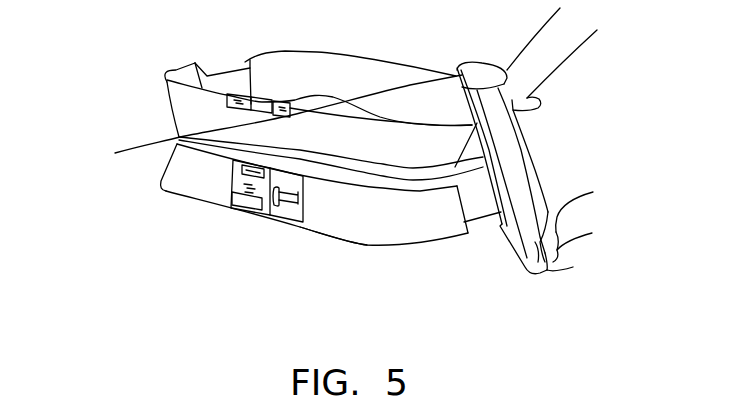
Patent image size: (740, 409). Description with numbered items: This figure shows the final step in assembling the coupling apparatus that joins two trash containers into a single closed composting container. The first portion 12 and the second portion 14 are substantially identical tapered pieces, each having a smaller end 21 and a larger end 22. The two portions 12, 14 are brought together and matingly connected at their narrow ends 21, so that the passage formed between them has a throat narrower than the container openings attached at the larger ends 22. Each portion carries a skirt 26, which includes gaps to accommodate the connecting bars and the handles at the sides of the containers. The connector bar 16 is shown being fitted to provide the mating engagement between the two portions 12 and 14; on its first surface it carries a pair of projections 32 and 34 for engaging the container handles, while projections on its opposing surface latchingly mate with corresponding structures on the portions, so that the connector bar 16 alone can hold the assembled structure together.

The first portion 12 is at (176, 100).
The second portion 14 is at (323, 223).
The connector bar 16 is at (527, 172).
The smaller end 21 is at (179, 138).
The larger end 22 is at (440, 242).
The skirt 26 is at (388, 227).
The projection 32 is at (526, 266).
The projection 34 is at (487, 77).